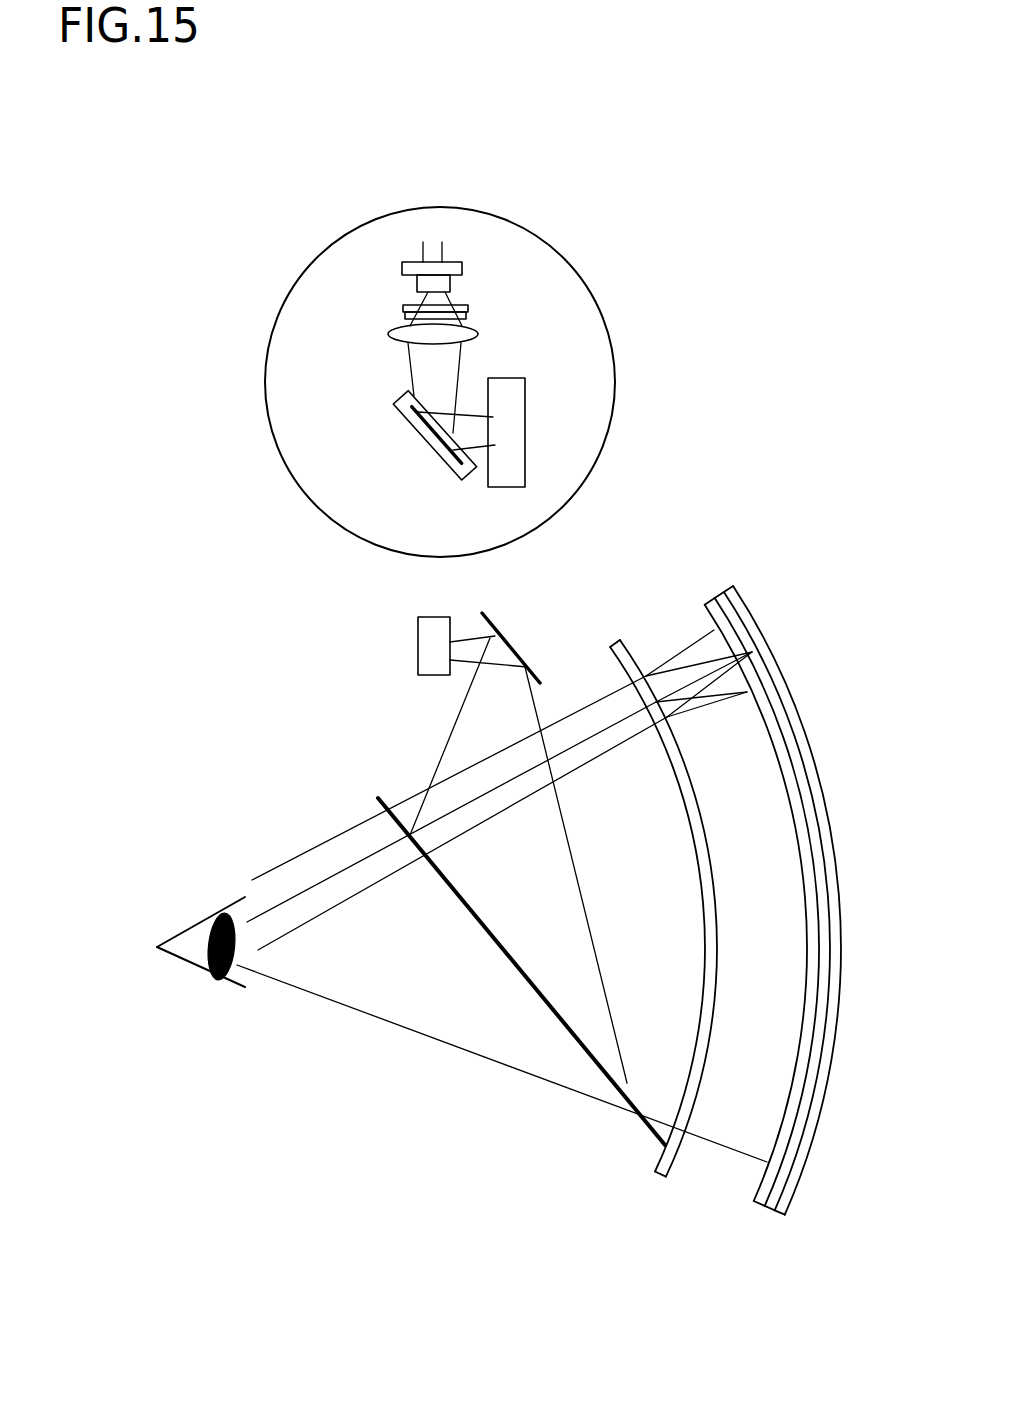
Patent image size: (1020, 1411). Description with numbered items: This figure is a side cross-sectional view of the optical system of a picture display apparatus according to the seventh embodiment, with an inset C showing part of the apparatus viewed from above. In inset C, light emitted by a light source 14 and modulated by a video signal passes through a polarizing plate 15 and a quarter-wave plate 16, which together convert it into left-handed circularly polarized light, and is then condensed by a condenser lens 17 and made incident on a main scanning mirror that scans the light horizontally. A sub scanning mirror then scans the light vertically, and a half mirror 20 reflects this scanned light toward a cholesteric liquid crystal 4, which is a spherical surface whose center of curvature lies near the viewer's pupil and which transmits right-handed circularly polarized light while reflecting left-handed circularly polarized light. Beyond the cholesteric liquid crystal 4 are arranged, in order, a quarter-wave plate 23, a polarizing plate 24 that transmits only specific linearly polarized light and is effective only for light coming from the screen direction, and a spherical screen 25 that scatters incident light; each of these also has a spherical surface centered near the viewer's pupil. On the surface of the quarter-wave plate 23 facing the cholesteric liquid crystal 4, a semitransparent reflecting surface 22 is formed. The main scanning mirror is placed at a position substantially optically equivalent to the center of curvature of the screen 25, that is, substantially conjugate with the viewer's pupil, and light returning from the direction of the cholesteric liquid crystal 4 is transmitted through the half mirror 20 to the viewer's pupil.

The part of the picture display apparatus viewed from above C is at (256, 388).
The light source 14 is at (456, 269).
The polarizing plate 15 is at (468, 309).
The quarter-wave plate 16 is at (468, 316).
The condenser lens 17 is at (390, 338).
The half mirror 20 is at (603, 1072).
The cholesteric liquid crystal 4 is at (657, 1176).
The semitransparent reflecting surface 22 is at (750, 1200).
The quarter-wave plate 23 is at (758, 1208).
The polarizing plate 24 is at (768, 1212).
The spherical screen 25 is at (782, 1212).